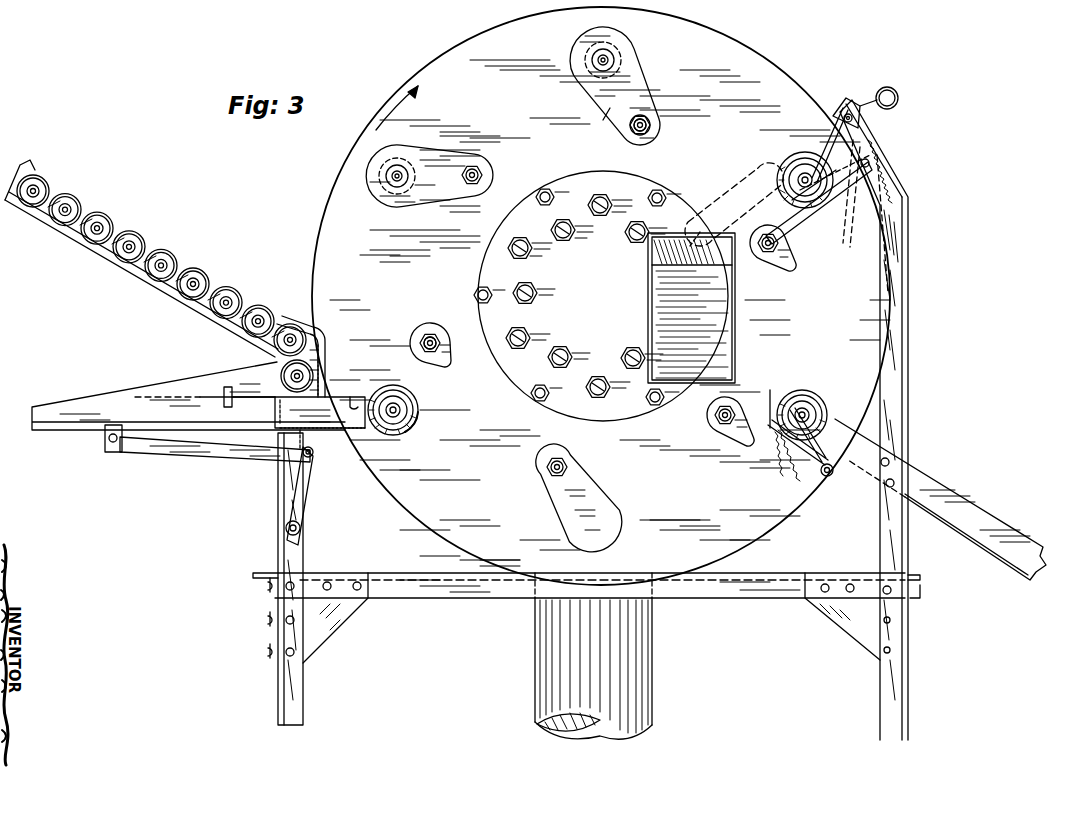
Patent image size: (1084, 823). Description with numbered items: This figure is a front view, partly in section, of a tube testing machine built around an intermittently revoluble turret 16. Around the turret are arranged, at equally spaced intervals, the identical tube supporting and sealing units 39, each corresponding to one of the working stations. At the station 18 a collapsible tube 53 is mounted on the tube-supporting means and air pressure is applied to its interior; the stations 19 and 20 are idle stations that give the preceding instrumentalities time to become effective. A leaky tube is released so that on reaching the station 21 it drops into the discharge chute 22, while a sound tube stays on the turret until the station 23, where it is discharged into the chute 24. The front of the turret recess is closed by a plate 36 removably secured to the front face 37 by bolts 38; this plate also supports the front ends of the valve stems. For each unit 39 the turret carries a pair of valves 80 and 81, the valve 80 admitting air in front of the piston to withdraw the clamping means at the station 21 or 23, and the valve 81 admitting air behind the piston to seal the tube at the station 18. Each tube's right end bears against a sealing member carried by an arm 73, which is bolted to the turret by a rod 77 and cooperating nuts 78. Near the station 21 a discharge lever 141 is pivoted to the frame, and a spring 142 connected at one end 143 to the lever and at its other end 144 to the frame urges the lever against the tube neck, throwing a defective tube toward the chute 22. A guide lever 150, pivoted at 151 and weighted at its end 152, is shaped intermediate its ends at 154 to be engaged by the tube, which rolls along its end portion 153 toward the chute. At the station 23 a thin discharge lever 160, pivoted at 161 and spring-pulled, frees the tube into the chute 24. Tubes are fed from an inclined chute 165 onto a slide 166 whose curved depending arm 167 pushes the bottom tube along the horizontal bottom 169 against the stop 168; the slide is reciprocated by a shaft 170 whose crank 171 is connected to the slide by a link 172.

The turret 16 is at (748, 72).
The station 18 is at (390, 405).
The idle station 19 is at (398, 158).
The idle station 20 is at (616, 48).
The station 21 is at (805, 165).
The discharge chute 22 is at (726, 320).
The station 23 is at (808, 402).
The chute 24 is at (920, 484).
The plate 36 is at (528, 388).
The front face 37 is at (603, 340).
The bolts 38 is at (444, 348).
The tube supporting and sealing unit 39 is at (634, 58).
The collapsible tube 53 is at (200, 280).
The arm 73 is at (598, 494).
The rod 77 is at (654, 124).
The nut 78 is at (656, 130).
The valve 80 is at (600, 217).
The valve 81 is at (565, 242).
The discharge lever 141 is at (819, 199).
The spring 142 is at (890, 172).
The end of spring 143 is at (872, 160).
The end of spring 144 is at (902, 193).
The guide lever 150 is at (833, 145).
The pivot 151 is at (847, 98).
The weighted end 152 is at (899, 98).
The end portion of guide lever 153 is at (742, 232).
The intermediate portion of guide lever 154 is at (811, 201).
The discharge lever 160 is at (822, 436).
The pivot 161 is at (826, 474).
The inclined chute 165 is at (140, 268).
The slide 166 is at (188, 378).
The curved depending arm 167 is at (368, 400).
The stop 168 is at (419, 420).
The horizontal bottom 169 is at (150, 446).
The shaft 170 is at (302, 528).
The crank 171 is at (306, 500).
The link 172 is at (226, 450).